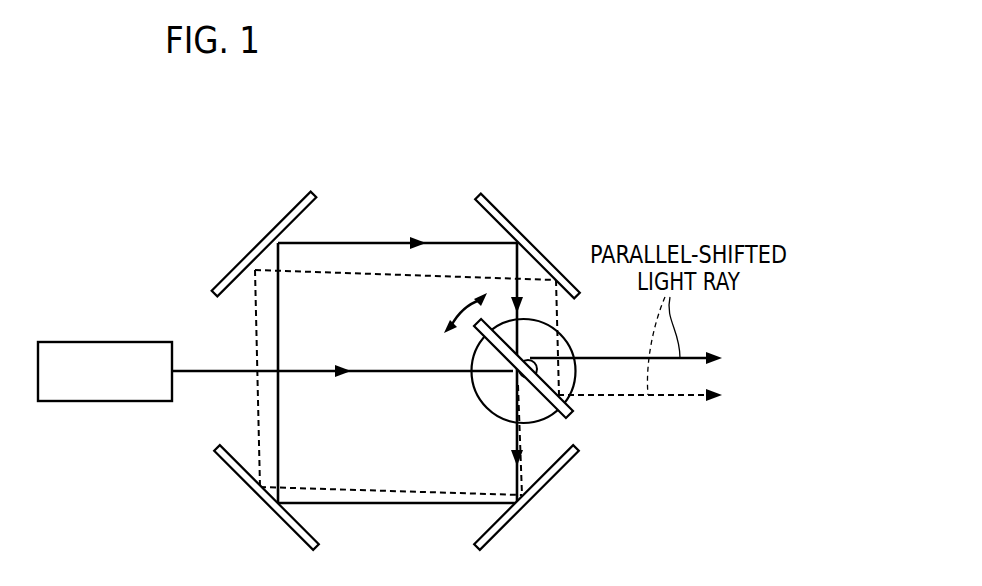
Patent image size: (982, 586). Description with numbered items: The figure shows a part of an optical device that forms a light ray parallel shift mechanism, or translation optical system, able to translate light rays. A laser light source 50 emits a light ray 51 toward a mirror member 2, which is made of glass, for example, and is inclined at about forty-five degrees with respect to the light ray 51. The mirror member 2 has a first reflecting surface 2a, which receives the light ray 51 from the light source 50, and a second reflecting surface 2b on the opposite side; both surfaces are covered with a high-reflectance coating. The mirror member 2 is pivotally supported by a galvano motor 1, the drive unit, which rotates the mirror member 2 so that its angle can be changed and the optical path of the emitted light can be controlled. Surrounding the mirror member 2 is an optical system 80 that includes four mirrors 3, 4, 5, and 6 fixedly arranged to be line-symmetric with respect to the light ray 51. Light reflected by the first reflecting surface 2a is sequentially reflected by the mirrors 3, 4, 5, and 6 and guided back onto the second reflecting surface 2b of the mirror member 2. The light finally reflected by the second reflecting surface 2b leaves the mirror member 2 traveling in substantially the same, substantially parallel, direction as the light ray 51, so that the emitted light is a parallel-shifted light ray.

The motor 1 is at (563, 335).
The mirror member 2 is at (591, 435).
The first reflecting surface 2a is at (477, 337).
The second reflecting surface 2b is at (573, 410).
The mirror 3 is at (518, 505).
The mirror 4 is at (272, 515).
The mirror 5 is at (275, 228).
The mirror 6 is at (522, 230).
The light source 50 is at (112, 341).
The light ray 51 is at (372, 373).
The optical system 80 is at (486, 153).